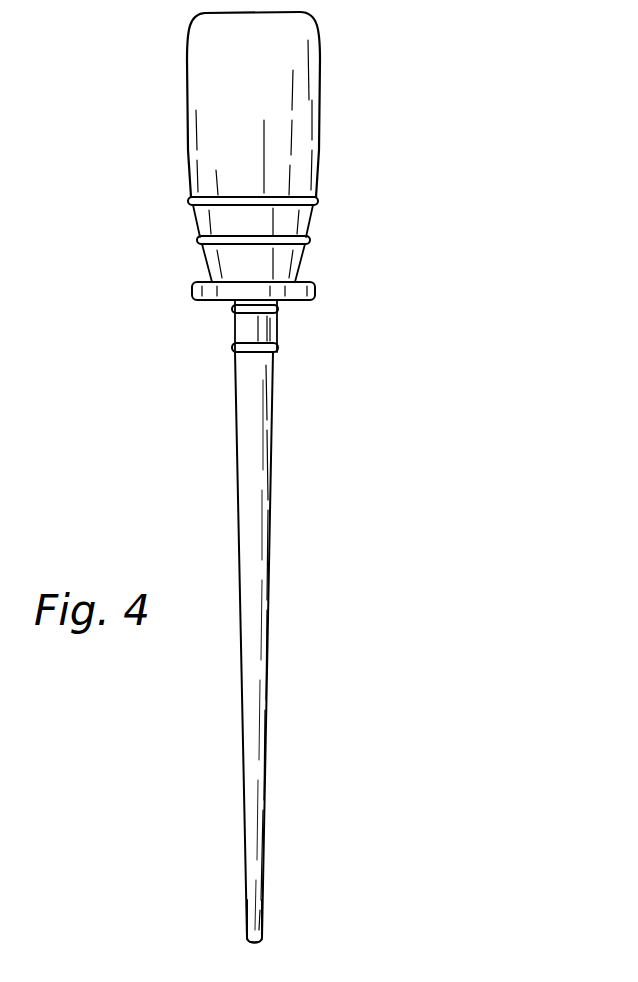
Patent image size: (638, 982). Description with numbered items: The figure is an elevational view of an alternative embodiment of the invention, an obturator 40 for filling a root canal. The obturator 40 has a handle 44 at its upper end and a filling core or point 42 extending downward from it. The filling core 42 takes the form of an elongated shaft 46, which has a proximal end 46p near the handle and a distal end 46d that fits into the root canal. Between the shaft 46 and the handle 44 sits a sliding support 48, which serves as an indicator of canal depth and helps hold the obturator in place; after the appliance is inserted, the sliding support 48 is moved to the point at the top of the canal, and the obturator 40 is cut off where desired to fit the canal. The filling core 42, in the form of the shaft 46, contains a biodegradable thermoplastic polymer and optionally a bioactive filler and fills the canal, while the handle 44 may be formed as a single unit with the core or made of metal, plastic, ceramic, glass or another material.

The obturator 40 is at (405, 72).
The handle 44 is at (227, 135).
The sliding support 48 is at (308, 293).
The proximal end 46p is at (242, 329).
The shaft 46 is at (237, 495).
The filling core 42 is at (253, 639).
The distal end 46d is at (262, 933).